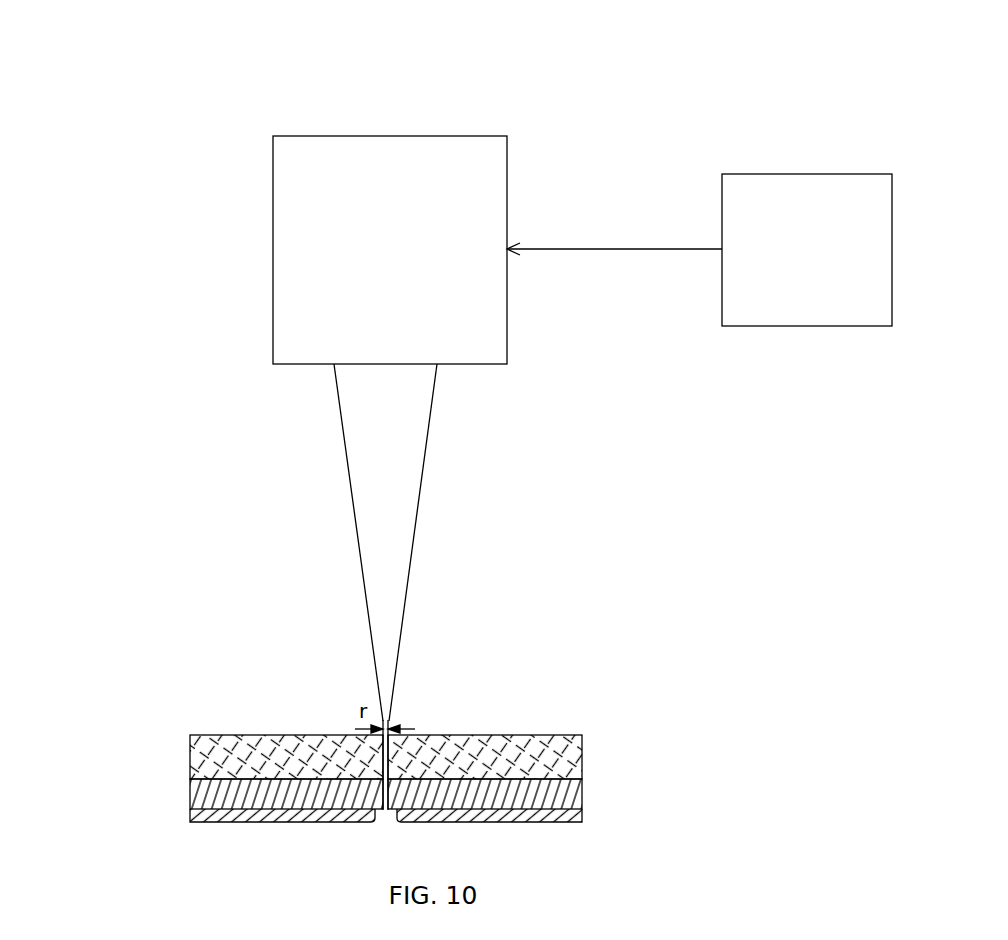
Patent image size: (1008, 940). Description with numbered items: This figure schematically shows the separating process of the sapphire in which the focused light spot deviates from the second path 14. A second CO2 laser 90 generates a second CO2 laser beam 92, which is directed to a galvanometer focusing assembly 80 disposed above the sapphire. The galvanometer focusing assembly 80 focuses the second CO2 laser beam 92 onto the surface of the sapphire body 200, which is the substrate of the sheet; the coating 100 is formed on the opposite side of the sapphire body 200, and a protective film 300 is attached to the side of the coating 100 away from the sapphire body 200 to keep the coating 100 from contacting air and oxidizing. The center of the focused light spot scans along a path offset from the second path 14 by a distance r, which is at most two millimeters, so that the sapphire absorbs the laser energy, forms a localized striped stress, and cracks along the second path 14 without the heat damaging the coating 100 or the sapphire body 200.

The galvanometer focusing assembly 80 is at (405, 228).
The second CO2 laser 90 is at (752, 237).
The second CO2 laser beam 92 is at (613, 250).
The second path 14 is at (378, 753).
The sapphire body 200 is at (207, 743).
The coating 100 is at (205, 790).
The protective film 300 is at (205, 817).